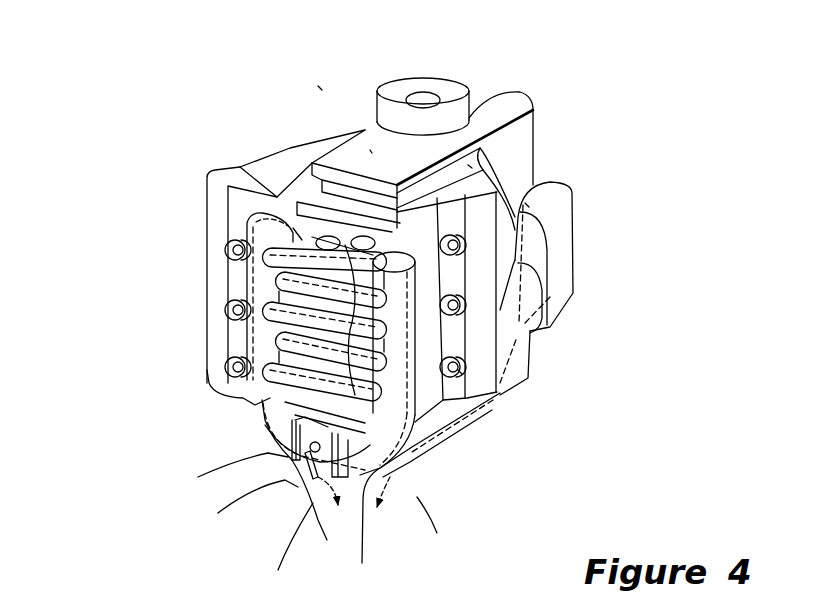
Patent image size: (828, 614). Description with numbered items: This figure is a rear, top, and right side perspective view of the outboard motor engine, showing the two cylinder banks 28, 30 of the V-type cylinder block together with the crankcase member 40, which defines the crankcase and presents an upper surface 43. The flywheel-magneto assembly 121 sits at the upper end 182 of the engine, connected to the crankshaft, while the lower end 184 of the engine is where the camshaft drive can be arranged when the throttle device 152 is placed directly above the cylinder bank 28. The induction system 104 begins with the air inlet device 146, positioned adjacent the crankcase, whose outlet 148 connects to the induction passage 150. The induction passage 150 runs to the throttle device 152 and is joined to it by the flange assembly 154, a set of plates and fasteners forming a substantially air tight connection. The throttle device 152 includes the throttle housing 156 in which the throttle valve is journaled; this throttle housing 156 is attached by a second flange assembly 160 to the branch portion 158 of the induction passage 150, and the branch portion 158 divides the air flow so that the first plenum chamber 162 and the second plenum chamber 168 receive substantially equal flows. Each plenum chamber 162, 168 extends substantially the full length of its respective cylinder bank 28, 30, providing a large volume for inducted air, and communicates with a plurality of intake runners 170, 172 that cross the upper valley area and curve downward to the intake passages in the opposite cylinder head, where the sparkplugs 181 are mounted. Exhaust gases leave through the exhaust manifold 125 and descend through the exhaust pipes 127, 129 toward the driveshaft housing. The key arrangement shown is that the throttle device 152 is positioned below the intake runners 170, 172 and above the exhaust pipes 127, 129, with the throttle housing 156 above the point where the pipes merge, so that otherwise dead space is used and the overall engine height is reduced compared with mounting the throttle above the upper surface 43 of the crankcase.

The cylinder bank 28 is at (238, 162).
The cylinder bank 30 is at (470, 165).
The crankcase member 40 is at (528, 90).
The upper surface 43 is at (370, 153).
The induction system 104 is at (135, 410).
The flywheel-magneto assembly 121 is at (410, 88).
The exhaust manifold 125 is at (527, 205).
The exhaust pipe 127 is at (270, 550).
The exhaust pipe 129 is at (443, 470).
The air inlet device 146 is at (557, 218).
The outlet 148 is at (547, 273).
The induction passage 150 is at (533, 350).
The throttle device 152 is at (273, 508).
The flange assembly 154 is at (362, 565).
The throttle housing 156 is at (265, 488).
The branch portion 158 is at (207, 430).
The flange assembly 160 is at (290, 455).
The first plenum chamber 162 is at (257, 283).
The second plenum chamber 168 is at (395, 420).
The intake runners 170 is at (345, 245).
The intake runners 172 is at (240, 348).
The sparkplugs 181 is at (460, 372).
The upper end 182 is at (320, 88).
The lower end 184 is at (520, 462).